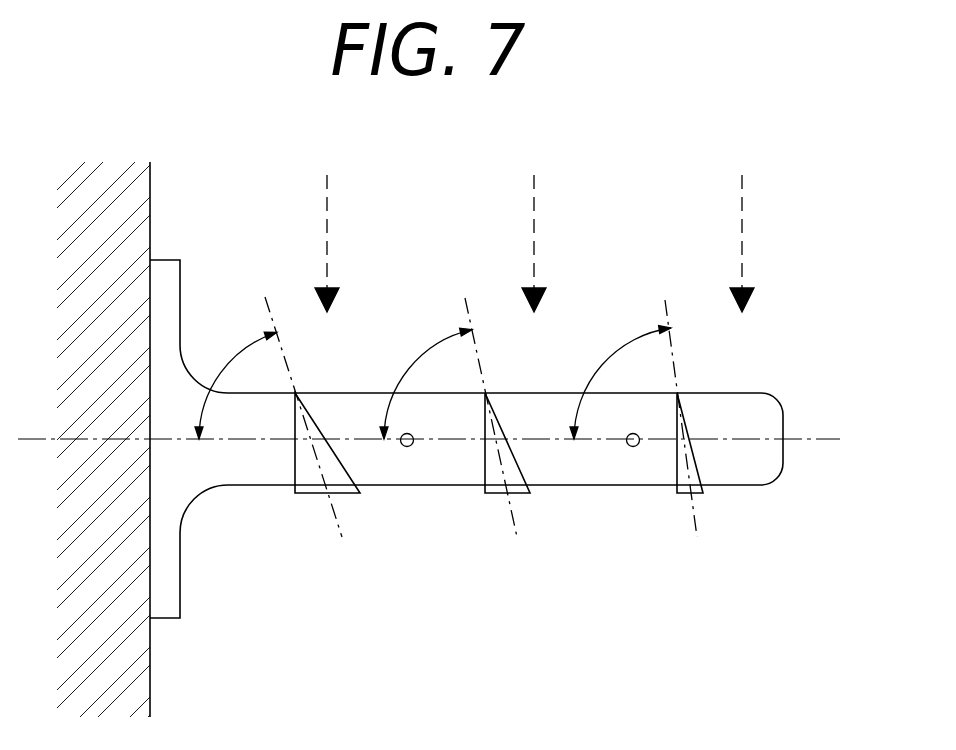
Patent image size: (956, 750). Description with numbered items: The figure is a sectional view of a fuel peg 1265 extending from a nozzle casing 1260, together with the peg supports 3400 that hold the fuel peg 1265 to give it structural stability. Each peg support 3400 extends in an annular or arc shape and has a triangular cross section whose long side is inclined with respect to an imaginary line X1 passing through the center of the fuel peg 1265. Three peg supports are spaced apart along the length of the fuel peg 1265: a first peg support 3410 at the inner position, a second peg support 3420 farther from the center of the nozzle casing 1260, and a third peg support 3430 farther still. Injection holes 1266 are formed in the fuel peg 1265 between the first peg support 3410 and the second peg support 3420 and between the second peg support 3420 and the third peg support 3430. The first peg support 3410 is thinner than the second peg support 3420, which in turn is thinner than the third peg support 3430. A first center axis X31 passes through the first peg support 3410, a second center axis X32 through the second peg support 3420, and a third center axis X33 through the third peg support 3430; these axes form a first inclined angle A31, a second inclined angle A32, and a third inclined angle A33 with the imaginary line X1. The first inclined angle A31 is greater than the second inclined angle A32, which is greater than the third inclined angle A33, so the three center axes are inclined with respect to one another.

The nozzle casing 1260 is at (102, 212).
The fuel peg 1265 is at (762, 415).
The injection hole 1266 is at (641, 436).
The peg support 3400 is at (501, 536).
The first peg support 3410 is at (683, 502).
The second peg support 3420 is at (493, 497).
The third peg support 3430 is at (318, 497).
The imaginary line X1 is at (443, 440).
The first center axis X31 is at (669, 400).
The second center axis X32 is at (480, 399).
The third center axis X33 is at (293, 399).
The first inclined angle A31 is at (620, 382).
The second inclined angle A32 is at (426, 383).
The third inclined angle A33 is at (236, 385).